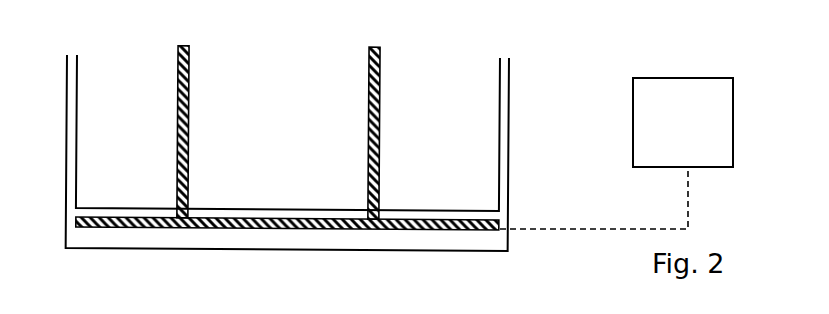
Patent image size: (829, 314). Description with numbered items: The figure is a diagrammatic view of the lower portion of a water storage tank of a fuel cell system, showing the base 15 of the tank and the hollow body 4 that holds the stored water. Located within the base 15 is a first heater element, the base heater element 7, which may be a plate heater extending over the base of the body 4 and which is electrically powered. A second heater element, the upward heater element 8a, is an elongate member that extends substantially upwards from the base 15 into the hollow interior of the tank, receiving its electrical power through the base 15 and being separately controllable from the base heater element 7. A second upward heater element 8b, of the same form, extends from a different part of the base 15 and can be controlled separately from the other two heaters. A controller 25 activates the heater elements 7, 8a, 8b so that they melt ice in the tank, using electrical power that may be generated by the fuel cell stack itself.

The hollow body 4 is at (501, 100).
The base heater element 7 is at (115, 227).
The upward heater element 8a is at (178, 97).
The second upward heater element 8b is at (370, 98).
The base 15 is at (520, 207).
The controller 25 is at (695, 137).